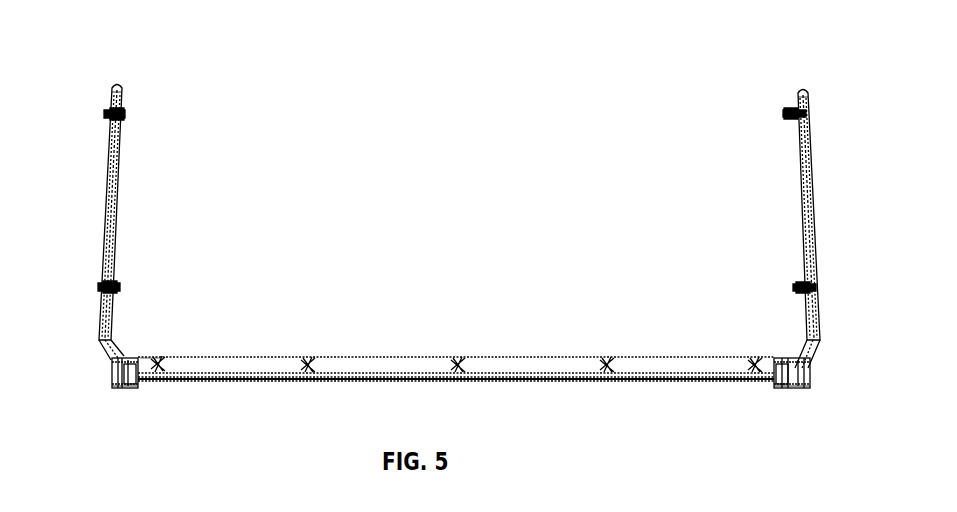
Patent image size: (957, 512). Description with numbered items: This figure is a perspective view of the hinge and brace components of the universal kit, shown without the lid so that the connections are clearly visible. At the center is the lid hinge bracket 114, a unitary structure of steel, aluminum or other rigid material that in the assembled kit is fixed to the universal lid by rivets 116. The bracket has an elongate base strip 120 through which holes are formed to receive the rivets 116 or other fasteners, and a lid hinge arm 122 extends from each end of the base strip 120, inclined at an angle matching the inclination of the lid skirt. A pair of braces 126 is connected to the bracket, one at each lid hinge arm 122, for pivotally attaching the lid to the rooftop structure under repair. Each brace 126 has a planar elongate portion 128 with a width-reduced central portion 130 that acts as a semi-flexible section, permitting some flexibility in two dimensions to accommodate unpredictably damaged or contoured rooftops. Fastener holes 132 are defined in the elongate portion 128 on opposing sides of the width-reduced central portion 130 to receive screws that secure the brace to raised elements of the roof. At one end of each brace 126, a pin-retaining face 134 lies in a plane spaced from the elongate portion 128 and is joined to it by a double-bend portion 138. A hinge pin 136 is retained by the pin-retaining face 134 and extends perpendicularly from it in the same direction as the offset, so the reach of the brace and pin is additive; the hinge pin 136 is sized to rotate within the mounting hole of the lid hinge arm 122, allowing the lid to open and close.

The lid hinge bracket 114 is at (312, 403).
The rivets 116 is at (168, 360).
The base strip 120 is at (413, 372).
The lid hinge arm 122 is at (133, 358).
The brace 126 is at (118, 63).
The planar elongate portion 128 is at (118, 138).
The width-reduced central portion 130 is at (113, 202).
The fastener holes 132 is at (101, 113).
The pin-retaining face 134 is at (121, 390).
The hinge pin 136 is at (140, 380).
The double-bend portion 138 is at (102, 362).